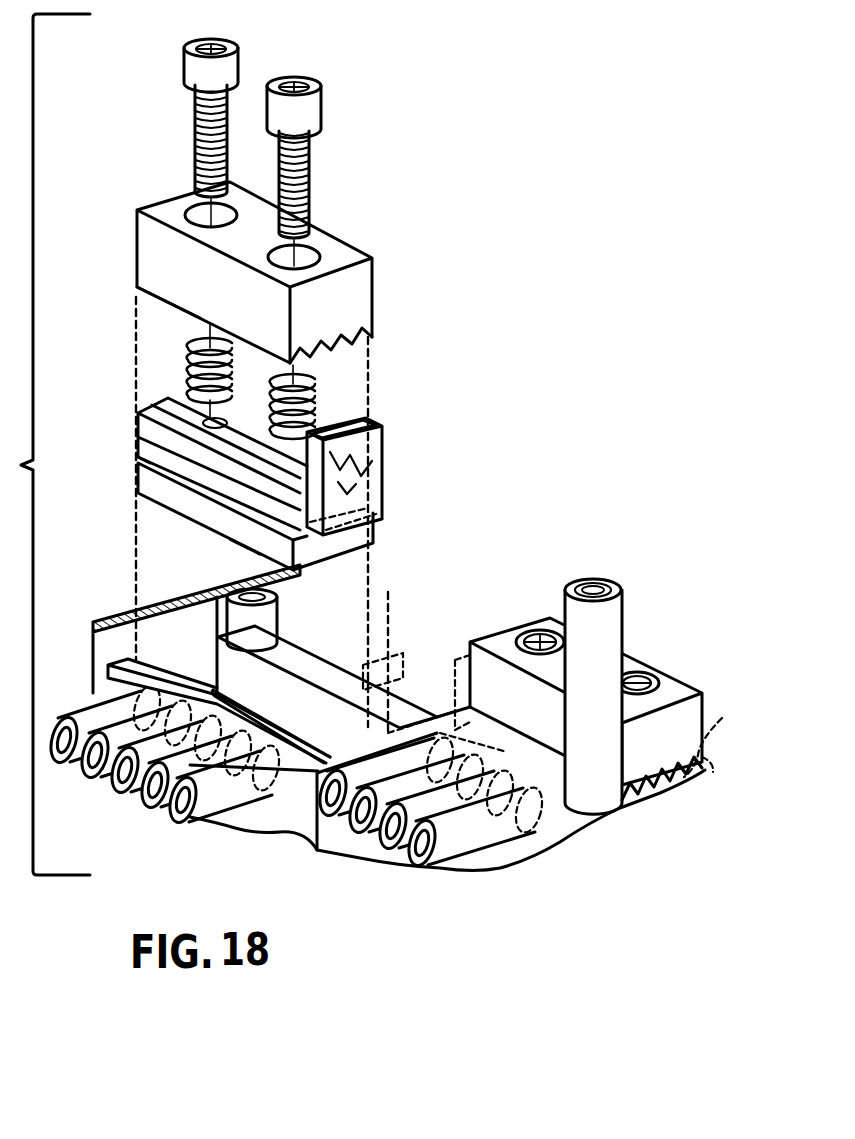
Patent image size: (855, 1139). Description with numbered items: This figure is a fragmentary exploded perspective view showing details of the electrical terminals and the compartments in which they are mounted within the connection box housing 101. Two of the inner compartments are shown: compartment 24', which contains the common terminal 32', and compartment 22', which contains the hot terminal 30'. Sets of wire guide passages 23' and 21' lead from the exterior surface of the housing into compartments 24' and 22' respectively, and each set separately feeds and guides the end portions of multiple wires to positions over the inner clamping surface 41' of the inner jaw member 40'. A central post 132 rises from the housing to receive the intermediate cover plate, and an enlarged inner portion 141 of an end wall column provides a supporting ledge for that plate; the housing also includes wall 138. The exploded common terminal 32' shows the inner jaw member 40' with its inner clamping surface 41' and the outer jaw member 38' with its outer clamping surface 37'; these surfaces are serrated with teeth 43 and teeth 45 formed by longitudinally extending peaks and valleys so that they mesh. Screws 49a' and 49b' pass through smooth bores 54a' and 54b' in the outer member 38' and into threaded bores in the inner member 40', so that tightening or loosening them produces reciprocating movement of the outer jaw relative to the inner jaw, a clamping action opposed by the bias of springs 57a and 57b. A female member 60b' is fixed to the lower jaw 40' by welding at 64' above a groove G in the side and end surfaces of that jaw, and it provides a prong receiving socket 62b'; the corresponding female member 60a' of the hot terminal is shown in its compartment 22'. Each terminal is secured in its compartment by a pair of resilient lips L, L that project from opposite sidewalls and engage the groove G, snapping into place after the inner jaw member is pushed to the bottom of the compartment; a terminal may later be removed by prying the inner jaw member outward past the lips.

The screw 49b' is at (374, 332).
The screw 49a' is at (497, 377).
The smooth bore 54b' is at (185, 192).
The smooth bore 54a' is at (326, 237).
The outer jaw member 38' is at (278, 272).
The outer clamping surface 37' is at (143, 306).
The spring 57b is at (187, 356).
The spring 57a is at (320, 407).
The inner clamping surface 41' is at (198, 464).
The prong receiving socket 62b' is at (381, 431).
The female member 60b' is at (378, 476).
The groove G is at (140, 500).
The common terminal 32' is at (82, 519).
The inner jaw member 40' is at (255, 516).
The weld 64' is at (220, 559).
The wall 138 is at (147, 605).
The enlarged inner portion 141 is at (277, 604).
The inner compartment 24' is at (219, 690).
The resilient lip L is at (247, 707).
The inner compartment 22' is at (554, 693).
The female member 60a' is at (473, 660).
The central post 132 is at (607, 635).
The teeth 43 is at (714, 736).
The hot terminal 30' is at (758, 751).
The teeth 45 is at (684, 778).
The wire guide set 23' is at (164, 774).
The wire guide set 21' is at (430, 821).
The connection box housing 101 is at (574, 883).